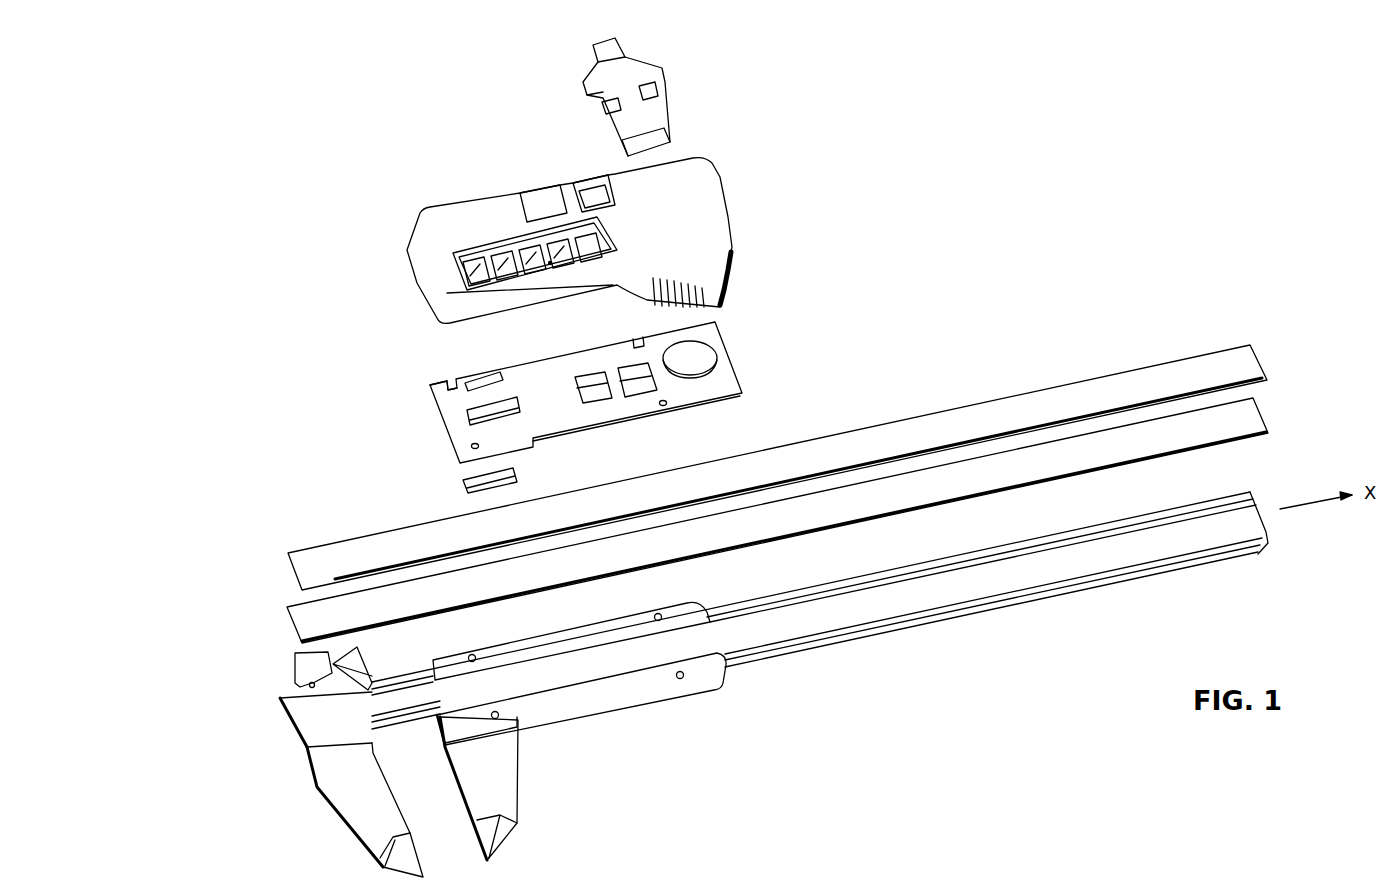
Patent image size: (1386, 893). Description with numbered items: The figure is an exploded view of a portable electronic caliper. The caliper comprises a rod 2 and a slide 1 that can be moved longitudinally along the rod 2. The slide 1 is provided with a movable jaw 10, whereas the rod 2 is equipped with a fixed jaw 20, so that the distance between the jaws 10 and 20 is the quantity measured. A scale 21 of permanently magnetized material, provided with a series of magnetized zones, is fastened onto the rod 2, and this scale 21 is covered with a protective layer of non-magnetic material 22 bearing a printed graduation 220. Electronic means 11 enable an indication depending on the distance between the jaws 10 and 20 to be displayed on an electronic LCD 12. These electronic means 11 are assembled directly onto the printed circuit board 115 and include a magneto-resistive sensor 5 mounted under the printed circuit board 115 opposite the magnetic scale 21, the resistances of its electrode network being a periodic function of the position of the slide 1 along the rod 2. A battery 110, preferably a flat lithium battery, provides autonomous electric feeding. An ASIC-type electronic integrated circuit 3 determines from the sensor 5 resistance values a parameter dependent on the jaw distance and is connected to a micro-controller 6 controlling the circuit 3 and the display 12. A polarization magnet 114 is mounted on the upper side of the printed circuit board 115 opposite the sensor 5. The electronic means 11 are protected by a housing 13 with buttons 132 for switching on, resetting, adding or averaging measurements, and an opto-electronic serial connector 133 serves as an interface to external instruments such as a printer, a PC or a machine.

The slide 1 is at (622, 688).
The rod 2 is at (1080, 580).
The ASIC-type electronic integrated circuit 3 is at (592, 387).
The magneto-resistive sensor 5 is at (467, 483).
The micro-controller 6 is at (640, 373).
The movable jaw 10 is at (498, 782).
The electronic means 11 is at (527, 372).
The electronic LCD 12 is at (462, 266).
The housing 13 is at (697, 197).
The fixed jaw 20 is at (358, 808).
The scale 21 is at (307, 622).
The protective layer of non-magnetic material 22 is at (307, 572).
The battery 110 is at (703, 355).
The polarization magnet 114 is at (465, 425).
The printed circuit board 115 is at (440, 397).
The buttons 132 is at (532, 202).
The opto-electronic serial connector 133 is at (643, 120).
The printed graduation 220 is at (342, 577).